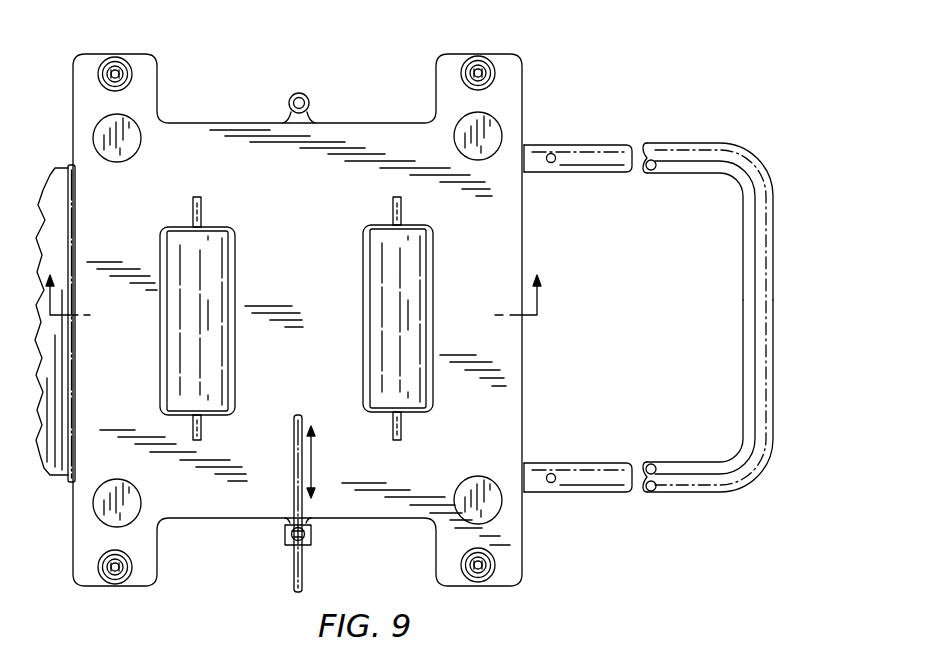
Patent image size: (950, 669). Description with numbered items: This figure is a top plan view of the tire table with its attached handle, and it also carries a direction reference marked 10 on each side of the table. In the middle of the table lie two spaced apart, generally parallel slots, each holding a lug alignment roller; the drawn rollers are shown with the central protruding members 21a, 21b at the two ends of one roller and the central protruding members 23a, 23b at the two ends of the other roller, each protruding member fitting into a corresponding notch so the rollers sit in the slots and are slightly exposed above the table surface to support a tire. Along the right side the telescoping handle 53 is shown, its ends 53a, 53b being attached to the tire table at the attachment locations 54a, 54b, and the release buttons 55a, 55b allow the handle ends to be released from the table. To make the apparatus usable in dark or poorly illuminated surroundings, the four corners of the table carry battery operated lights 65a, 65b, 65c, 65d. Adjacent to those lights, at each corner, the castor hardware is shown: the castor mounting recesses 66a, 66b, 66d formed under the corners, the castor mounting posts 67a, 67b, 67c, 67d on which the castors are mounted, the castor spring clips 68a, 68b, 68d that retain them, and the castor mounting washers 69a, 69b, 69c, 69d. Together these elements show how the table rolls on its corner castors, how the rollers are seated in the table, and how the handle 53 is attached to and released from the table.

The direction of movement 10 is at (295, 284).
The central protruding member 21a is at (203, 432).
The central protruding member 21b is at (203, 208).
The central protruding member 23a is at (402, 430).
The central protruding member 23b is at (392, 207).
The telescoping handle 53 is at (714, 332).
The handle end 53a is at (714, 174).
The handle end 53b is at (678, 493).
The handle attachment 54a is at (538, 146).
The handle attachment 54b is at (527, 494).
The release button 55a is at (552, 163).
The release button 55b is at (552, 474).
The battery operated light 65a is at (132, 142).
The battery operated light 65b is at (462, 142).
The battery operated light 65c is at (130, 509).
The battery operated light 65d is at (478, 490).
The castor mounting recess 66a is at (100, 60).
The castor mounting recess 66b is at (494, 62).
The castor mounting recess 66d is at (103, 570).
The castor mounting post 67a is at (104, 84).
The castor mounting post 67b is at (490, 80).
The castor mounting post 67c is at (126, 562).
The castor mounting post 67d is at (468, 565).
The castor spring clip 68a is at (126, 73).
The castor spring clip 68b is at (467, 70).
The castor spring clip 68d is at (116, 574).
The castor mounting washer 69a is at (114, 67).
The castor mounting washer 69b is at (477, 65).
The castor mounting washer 69c is at (124, 572).
The castor mounting washer 69d is at (488, 572).